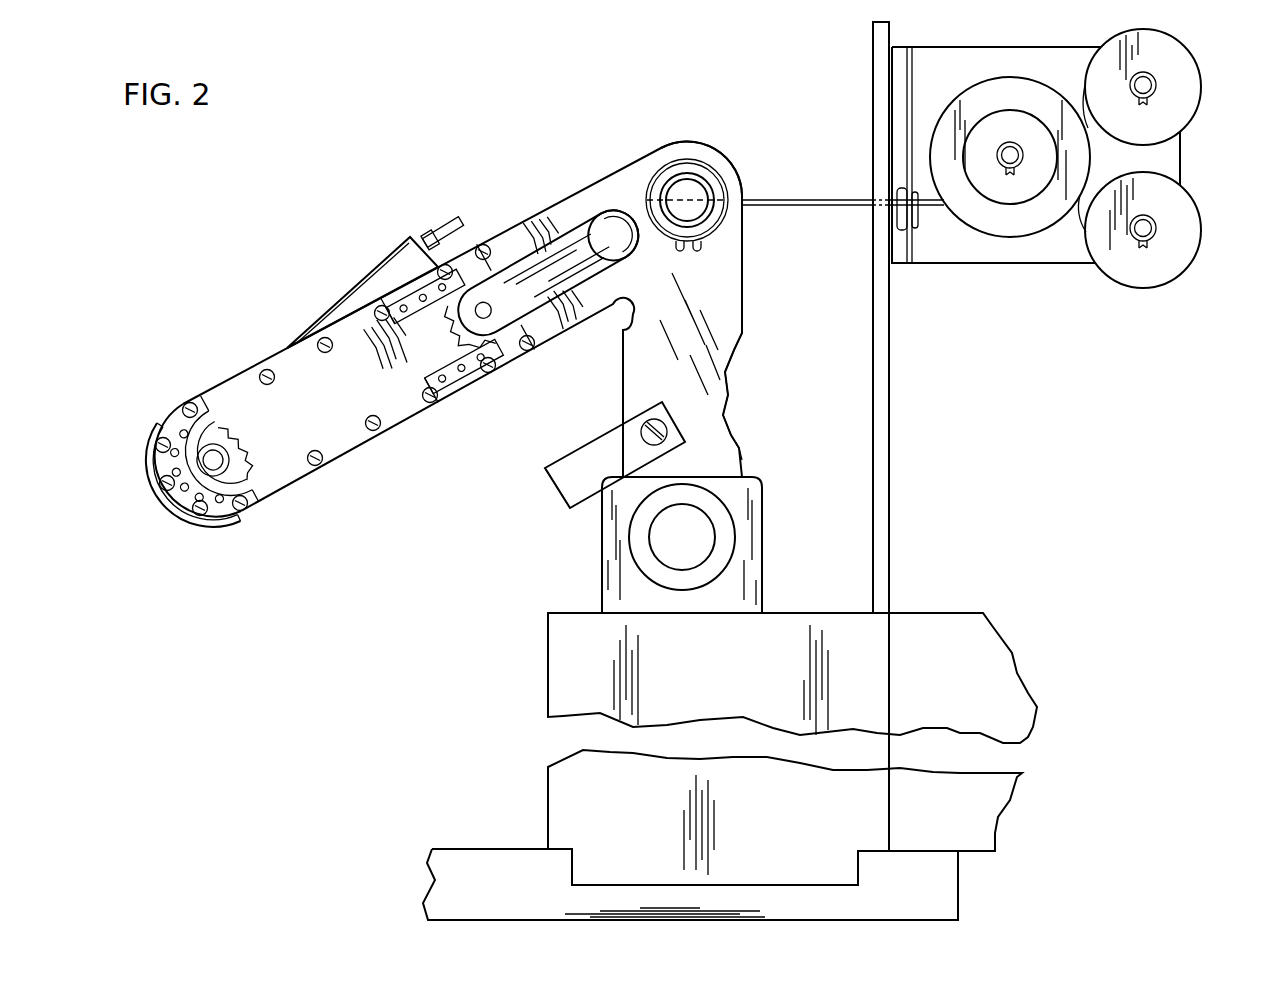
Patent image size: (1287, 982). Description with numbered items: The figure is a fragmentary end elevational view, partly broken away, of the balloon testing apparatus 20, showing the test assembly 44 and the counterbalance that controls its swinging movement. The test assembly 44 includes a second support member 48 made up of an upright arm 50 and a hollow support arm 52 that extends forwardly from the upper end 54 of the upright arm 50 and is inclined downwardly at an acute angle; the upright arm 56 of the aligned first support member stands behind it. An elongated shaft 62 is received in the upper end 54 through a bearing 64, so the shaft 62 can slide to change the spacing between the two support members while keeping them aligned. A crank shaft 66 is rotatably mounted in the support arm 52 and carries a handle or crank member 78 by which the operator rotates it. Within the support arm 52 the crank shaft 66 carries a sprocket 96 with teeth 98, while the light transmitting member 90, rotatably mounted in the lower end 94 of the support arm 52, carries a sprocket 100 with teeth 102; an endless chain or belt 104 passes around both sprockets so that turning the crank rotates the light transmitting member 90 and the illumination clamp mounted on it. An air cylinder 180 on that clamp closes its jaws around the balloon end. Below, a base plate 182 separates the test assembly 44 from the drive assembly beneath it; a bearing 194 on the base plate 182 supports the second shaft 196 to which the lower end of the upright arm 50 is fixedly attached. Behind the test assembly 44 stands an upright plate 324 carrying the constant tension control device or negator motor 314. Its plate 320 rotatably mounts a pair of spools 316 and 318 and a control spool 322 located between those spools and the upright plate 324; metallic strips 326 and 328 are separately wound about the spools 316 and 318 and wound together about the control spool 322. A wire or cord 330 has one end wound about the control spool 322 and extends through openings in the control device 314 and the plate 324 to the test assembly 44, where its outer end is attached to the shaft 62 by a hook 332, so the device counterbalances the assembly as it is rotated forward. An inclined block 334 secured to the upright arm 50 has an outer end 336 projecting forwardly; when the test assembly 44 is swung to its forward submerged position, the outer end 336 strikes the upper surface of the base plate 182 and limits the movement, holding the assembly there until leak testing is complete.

The apparatus 20 is at (540, 653).
The test assembly 44 is at (725, 151).
The second support member 48 is at (732, 286).
The upright arm 50 is at (734, 323).
The hollow support arm 52 is at (543, 212).
The upper end 54 is at (698, 152).
The upright arm 56 is at (731, 384).
The elongated shaft 62 is at (668, 178).
The bearing 64 is at (678, 190).
The crank shaft 66 is at (482, 304).
The handle or crank member 78 is at (589, 226).
The light transmitting member 90 is at (193, 470).
The lower end 94 is at (192, 505).
The sprocket 96 is at (494, 358).
The teeth 98 is at (452, 326).
The sprocket 100 is at (240, 518).
The teeth 102 is at (245, 449).
The endless chain or belt 104 is at (255, 470).
The air cylinder 180 is at (386, 276).
The base plate 182 is at (560, 612).
The bearing 194 is at (757, 493).
The second shaft 196 is at (700, 542).
The constant tension control device 314 is at (933, 268).
The spool 316 is at (1191, 78).
The spool 318 is at (1198, 223).
The plate 320 is at (1170, 158).
The control spool 322 is at (980, 96).
The post 324 is at (887, 35).
The elongated strip 326 is at (1077, 98).
The elongated strip 328 is at (1093, 183).
The wire or cord 330 is at (790, 197).
The hook 332 is at (647, 177).
The inclined block 334 is at (598, 440).
The outer end 336 is at (571, 496).